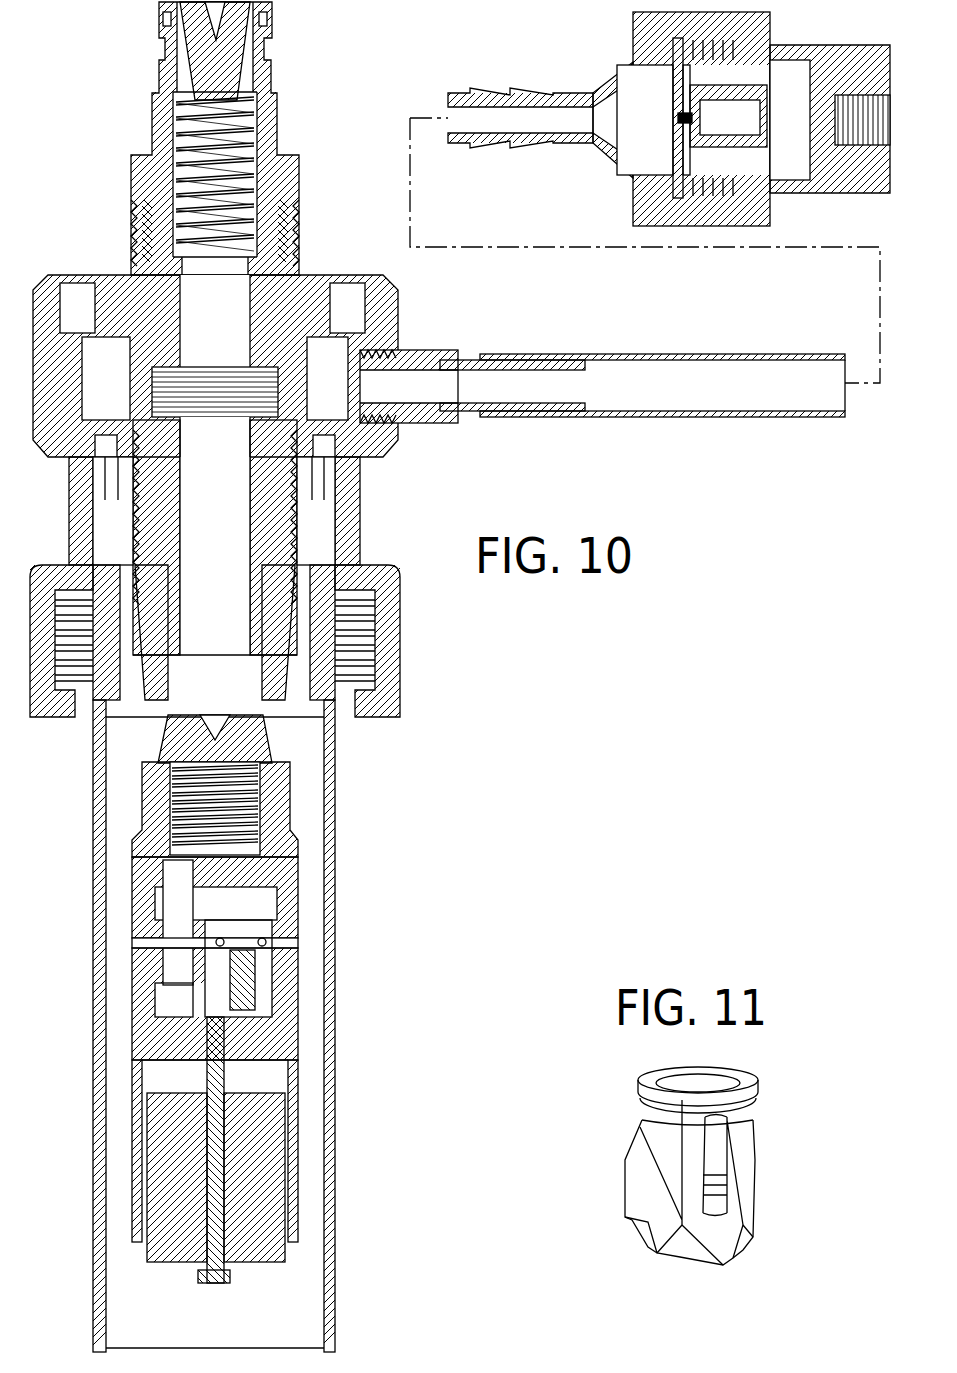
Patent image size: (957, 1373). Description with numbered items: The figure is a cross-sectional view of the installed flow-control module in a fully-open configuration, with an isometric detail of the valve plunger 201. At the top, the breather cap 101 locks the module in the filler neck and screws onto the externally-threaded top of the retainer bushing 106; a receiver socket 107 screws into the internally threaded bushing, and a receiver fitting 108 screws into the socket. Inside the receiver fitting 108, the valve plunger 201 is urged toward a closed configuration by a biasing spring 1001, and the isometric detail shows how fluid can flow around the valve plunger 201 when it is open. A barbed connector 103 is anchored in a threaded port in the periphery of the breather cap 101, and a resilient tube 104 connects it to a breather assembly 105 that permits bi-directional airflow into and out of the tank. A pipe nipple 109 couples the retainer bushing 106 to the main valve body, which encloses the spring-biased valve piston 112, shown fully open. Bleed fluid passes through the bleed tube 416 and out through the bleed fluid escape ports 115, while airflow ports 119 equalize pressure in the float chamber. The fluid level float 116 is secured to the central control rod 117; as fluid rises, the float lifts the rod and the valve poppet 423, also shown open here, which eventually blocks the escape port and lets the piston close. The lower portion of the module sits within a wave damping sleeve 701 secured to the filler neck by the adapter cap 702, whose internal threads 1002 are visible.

In FIG. 10, the valve plunger 201 is at (218, 68).
In FIG. 11, the valve plunger 201 is at (738, 1165).
In FIG. 10, the receiver fitting 108 is at (162, 137).
In FIG. 10, the biasing spring 1001 is at (208, 188).
In FIG. 10, the receiver socket 107 is at (133, 231).
In FIG. 10, the breather cap 101 is at (380, 307).
In FIG. 10, the barbed connector 103 is at (440, 418).
In FIG. 10, the resilient tube 104 is at (665, 415).
In FIG. 10, the breather assembly 105 is at (541, 33).
In FIG. 10, the retainer bushing 106 is at (285, 475).
In FIG. 10, the pipe nipple 109 is at (283, 535).
In FIG. 10, the adapter cap 702 is at (388, 645).
In FIG. 10, the internal threads 1002 is at (355, 672).
In FIG. 10, the valve piston 112 is at (168, 752).
In FIG. 10, the bleed tube 416 is at (168, 903).
In FIG. 10, the bleed fluid escape ports 115 is at (128, 940).
In FIG. 10, the wave damping sleeve 701 is at (333, 966).
In FIG. 10, the valve poppet 423 is at (255, 985).
In FIG. 10, the airflow ports 119 is at (132, 1066).
In FIG. 10, the central control rod 117 is at (215, 1145).
In FIG. 10, the fluid level float 116 is at (262, 1165).